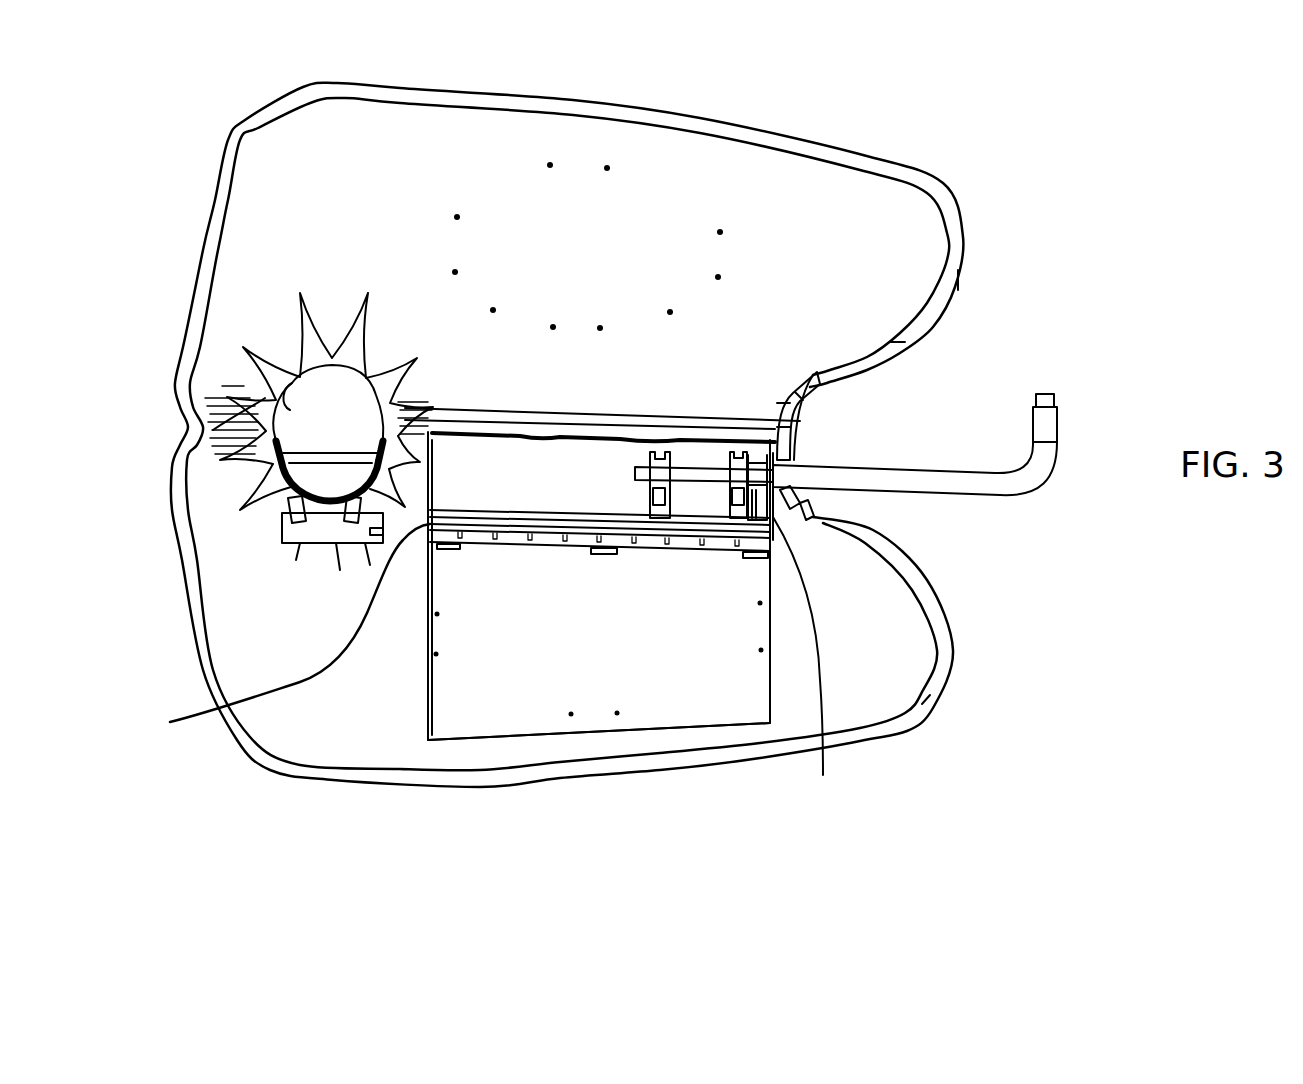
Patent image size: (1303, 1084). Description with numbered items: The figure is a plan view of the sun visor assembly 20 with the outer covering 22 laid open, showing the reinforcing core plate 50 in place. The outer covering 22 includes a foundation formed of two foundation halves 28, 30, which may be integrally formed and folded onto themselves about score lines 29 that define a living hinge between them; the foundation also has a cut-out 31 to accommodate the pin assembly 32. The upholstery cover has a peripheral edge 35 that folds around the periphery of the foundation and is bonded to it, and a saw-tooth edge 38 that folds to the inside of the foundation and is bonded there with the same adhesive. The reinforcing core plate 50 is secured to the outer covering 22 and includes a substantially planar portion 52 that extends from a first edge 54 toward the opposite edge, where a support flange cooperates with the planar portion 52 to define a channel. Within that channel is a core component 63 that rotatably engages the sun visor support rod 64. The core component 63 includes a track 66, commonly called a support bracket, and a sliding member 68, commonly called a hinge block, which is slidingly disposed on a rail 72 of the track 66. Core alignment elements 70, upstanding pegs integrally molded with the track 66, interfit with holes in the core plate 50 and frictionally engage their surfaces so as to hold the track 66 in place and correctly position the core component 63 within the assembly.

The sun visor assembly 20 is at (1058, 636).
The outer covering 22 is at (874, 155).
The foundation half 28 is at (891, 318).
The score lines 29 is at (230, 430).
The foundation half 30 is at (885, 700).
The cut-out 31 is at (300, 390).
The pin assembly 32 is at (325, 527).
The peripheral edge 35 is at (953, 279).
The saw-tooth edge 38 is at (300, 377).
The reinforcing core plate 50 is at (425, 690).
The planar portion 52 is at (495, 698).
The first edge 54 is at (628, 730).
The core component 63 is at (814, 462).
The sun visor support rod 64 is at (938, 483).
The track 66 is at (280, 635).
The sliding member 68 is at (804, 632).
The core alignment elements 70 is at (603, 550).
The rail 72 is at (511, 512).